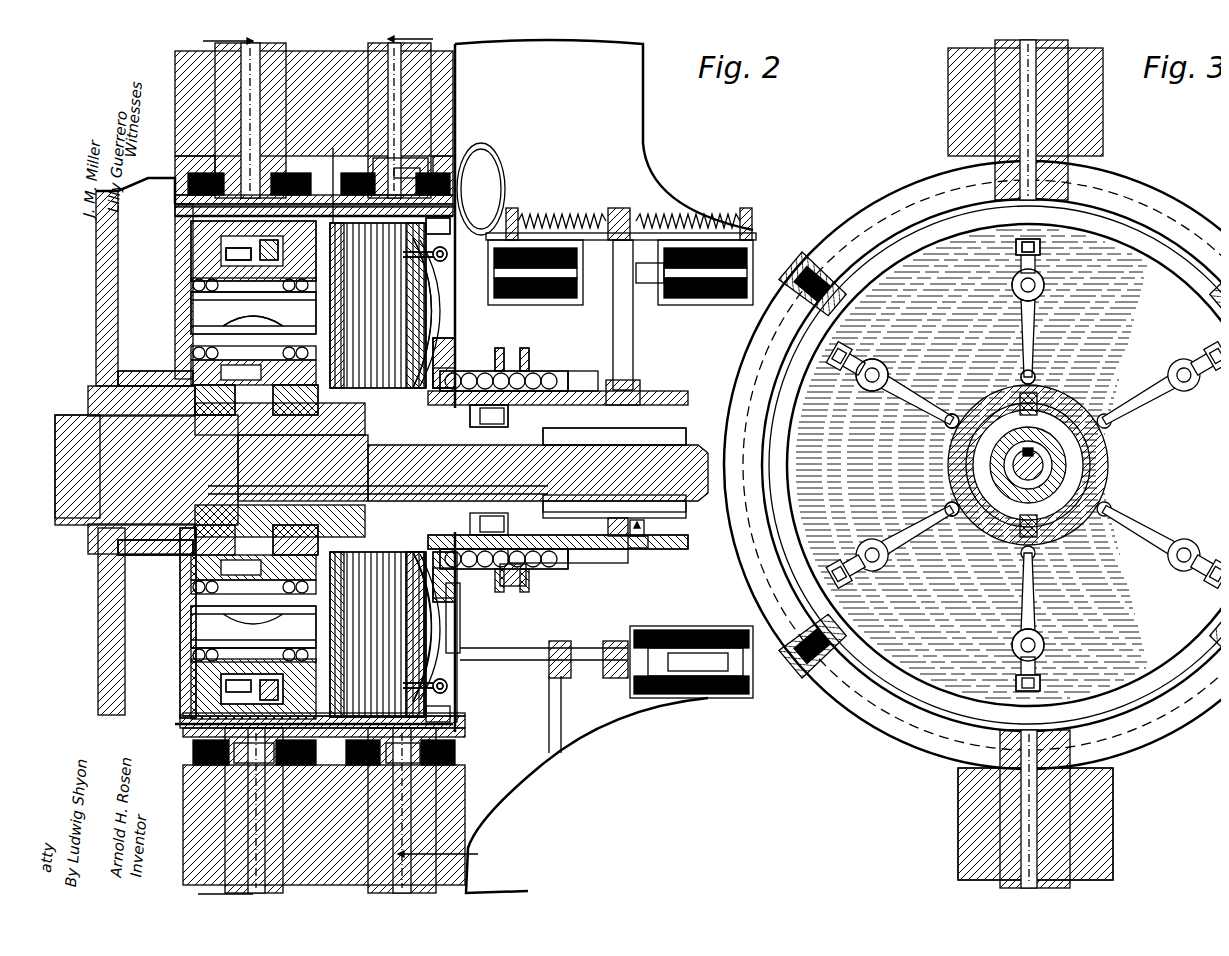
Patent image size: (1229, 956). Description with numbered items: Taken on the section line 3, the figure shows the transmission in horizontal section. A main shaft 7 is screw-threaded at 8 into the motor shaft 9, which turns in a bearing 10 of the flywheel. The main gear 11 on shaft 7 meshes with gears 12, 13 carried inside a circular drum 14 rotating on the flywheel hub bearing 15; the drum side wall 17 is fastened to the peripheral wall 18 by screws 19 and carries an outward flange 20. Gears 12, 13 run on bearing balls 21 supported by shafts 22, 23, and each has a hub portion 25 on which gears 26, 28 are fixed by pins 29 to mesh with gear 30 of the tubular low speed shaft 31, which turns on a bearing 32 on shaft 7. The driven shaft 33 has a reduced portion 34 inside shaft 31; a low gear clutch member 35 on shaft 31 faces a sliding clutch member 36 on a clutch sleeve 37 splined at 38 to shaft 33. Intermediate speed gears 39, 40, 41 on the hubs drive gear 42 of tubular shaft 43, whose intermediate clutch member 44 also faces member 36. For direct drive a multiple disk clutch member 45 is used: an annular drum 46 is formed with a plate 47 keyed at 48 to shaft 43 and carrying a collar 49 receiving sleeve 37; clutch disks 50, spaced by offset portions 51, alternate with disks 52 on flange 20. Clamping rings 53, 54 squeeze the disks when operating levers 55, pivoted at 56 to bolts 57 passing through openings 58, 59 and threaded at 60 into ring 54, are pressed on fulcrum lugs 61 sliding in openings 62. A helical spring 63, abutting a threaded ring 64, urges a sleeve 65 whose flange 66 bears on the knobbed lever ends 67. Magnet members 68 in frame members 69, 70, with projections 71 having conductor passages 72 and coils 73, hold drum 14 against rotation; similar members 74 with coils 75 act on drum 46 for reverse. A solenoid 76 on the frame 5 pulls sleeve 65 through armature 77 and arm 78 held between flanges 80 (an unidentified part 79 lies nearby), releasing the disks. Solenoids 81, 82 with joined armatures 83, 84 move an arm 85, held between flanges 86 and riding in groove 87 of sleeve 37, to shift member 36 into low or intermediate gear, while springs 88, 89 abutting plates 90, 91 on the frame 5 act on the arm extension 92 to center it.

In FIG. 2, the section line 3 is at (440, 447).
In FIG. 2, the frame 5 is at (590, 772).
In FIG. 2, the main shaft 7 is at (150, 545).
In FIG. 2, the screw-threaded portion 8 is at (130, 545).
In FIG. 2, the motor shaft 9 is at (60, 405).
In FIG. 2, the bearing 10 is at (122, 370).
In FIG. 2, the main gear 11 is at (215, 403).
In FIG. 2, the gear 12 is at (172, 672).
In FIG. 2, the gear 13 is at (167, 222).
In FIG. 2, the circular drum 14 is at (165, 205).
In FIG. 2, the bearing 15 is at (132, 372).
In FIG. 2, the side wall 17 is at (450, 693).
In FIG. 2, the peripheral wall 18 is at (180, 716).
In FIG. 2, the screws 19 is at (268, 695).
In FIG. 2, the annular flange 20 is at (445, 575).
In FIG. 2, the bearing balls 21 is at (185, 262).
In FIG. 2, the shaft 22 is at (253, 625).
In FIG. 2, the shaft 23 is at (253, 313).
In FIG. 2, the hub portion 25 is at (253, 313).
In FIG. 2, the gear 26 is at (242, 240).
In FIG. 2, the gear 28 is at (252, 690).
In FIG. 2, the pins 29 is at (252, 463).
In FIG. 2, the gear 30 is at (175, 580).
In FIG. 2, the tubular low speed shaft 31 is at (378, 495).
In FIG. 3, the tubular low speed shaft 31 is at (1060, 462).
In FIG. 2, the bearing 32 is at (211, 470).
In FIG. 2, the driven shaft 33 is at (690, 470).
In FIG. 2, the reduced portion 34 is at (614, 505).
In FIG. 3, the reduced portion 34 is at (992, 520).
In FIG. 2, the low gear clutch member 35 is at (614, 436).
In FIG. 2, the sliding clutch member 36 is at (489, 416).
In FIG. 2, the sliding clutch sleeve 37 is at (600, 528).
In FIG. 2, the splines 38 is at (628, 528).
In FIG. 2, the intermediate speed gear 39 is at (270, 238).
In FIG. 2, the intermediate speed gear 40 is at (558, 523).
In FIG. 2, the intermediate speed gear 41 is at (215, 467).
In FIG. 2, the gear 42 is at (295, 402).
In FIG. 2, the tubular shaft 43 is at (430, 347).
In FIG. 3, the tubular shaft 43 is at (1080, 442).
In FIG. 2, the intermediate speed clutch member 44 is at (500, 345).
In FIG. 2, the multiple disk clutch member 45 is at (450, 215).
In FIG. 2, the annular drum 46 is at (481, 189).
In FIG. 3, the annular drum 46 is at (764, 493).
In FIG. 2, the circular plate 47 is at (430, 320).
In FIG. 3, the key 48 is at (1024, 392).
In FIG. 2, the collar 49 is at (540, 365).
In FIG. 3, the collar 49 is at (1060, 405).
In FIG. 2, the clutch disks 50 is at (378, 305).
In FIG. 2, the offset portions 51 is at (400, 175).
In FIG. 2, the clutch disks 52 is at (440, 580).
In FIG. 2, the clamping ring 53 is at (420, 613).
In FIG. 2, the clamping ring 54 is at (430, 630).
In FIG. 2, the operating levers 55 is at (436, 300).
In FIG. 3, the operating levers 55 is at (1040, 330).
In FIG. 2, the pivot 56 is at (440, 248).
In FIG. 3, the pivot 56 is at (820, 368).
In FIG. 2, the bolts 57 is at (440, 244).
In FIG. 3, the bolts 57 is at (1032, 240).
In FIG. 2, the openings 58 is at (437, 228).
In FIG. 2, the openings 59 is at (333, 175).
In FIG. 2, the screw-threaded portion 60 is at (302, 640).
In FIG. 2, the fulcrum lugs 61 is at (449, 472).
In FIG. 3, the fulcrum lugs 61 is at (1040, 278).
In FIG. 2, the openings 62 is at (440, 265).
In FIG. 2, the helical expansion spring 63 is at (540, 556).
In FIG. 2, the ring 64 is at (572, 556).
In FIG. 2, the sleeve 65 is at (552, 370).
In FIG. 2, the annular flange 66 is at (504, 563).
In FIG. 2, the knobs 67 is at (440, 368).
In FIG. 3, the knobs 67 is at (947, 410).
In FIG. 2, the magnet members 68 is at (200, 160).
In FIG. 2, the frame member 69 is at (182, 103).
In FIG. 3, the frame member 69 is at (945, 82).
In FIG. 2, the frame member 70 is at (195, 815).
In FIG. 3, the frame member 70 is at (960, 822).
In FIG. 2, the projections 71 is at (217, 68).
In FIG. 3, the projections 71 is at (960, 58).
In FIG. 2, the conductor passage 72 is at (326, 468).
In FIG. 3, the conductor passage 72 is at (1015, 90).
In FIG. 2, the electromagnet coils 73 is at (232, 178).
In FIG. 2, the magnet members 74 is at (440, 135).
In FIG. 3, the magnet members 74 is at (922, 160).
In FIG. 2, the electromagnet coils 75 is at (359, 460).
In FIG. 3, the electromagnet coils 75 is at (786, 262).
In FIG. 2, the solenoid 76 is at (708, 692).
In FIG. 2, the armature 77 is at (672, 690).
In FIG. 2, the arm 78 is at (582, 640).
In FIG. 2, the pipe 79 is at (500, 585).
In FIG. 2, the annular flanges 80 is at (515, 580).
In FIG. 2, the solenoid 81 is at (705, 297).
In FIG. 2, the solenoid 82 is at (530, 297).
In FIG. 2, the armature 83 is at (670, 297).
In FIG. 2, the armature 84 is at (572, 297).
In FIG. 2, the arm 85 is at (625, 350).
In FIG. 2, the annular flanges 86 is at (645, 290).
In FIG. 2, the annular groove 87 is at (628, 540).
In FIG. 2, the expansion spring 88 is at (655, 205).
In FIG. 2, the expansion spring 89 is at (540, 200).
In FIG. 2, the plate 90 is at (740, 205).
In FIG. 2, the plate 91 is at (504, 198).
In FIG. 2, the extension 92 is at (608, 198).